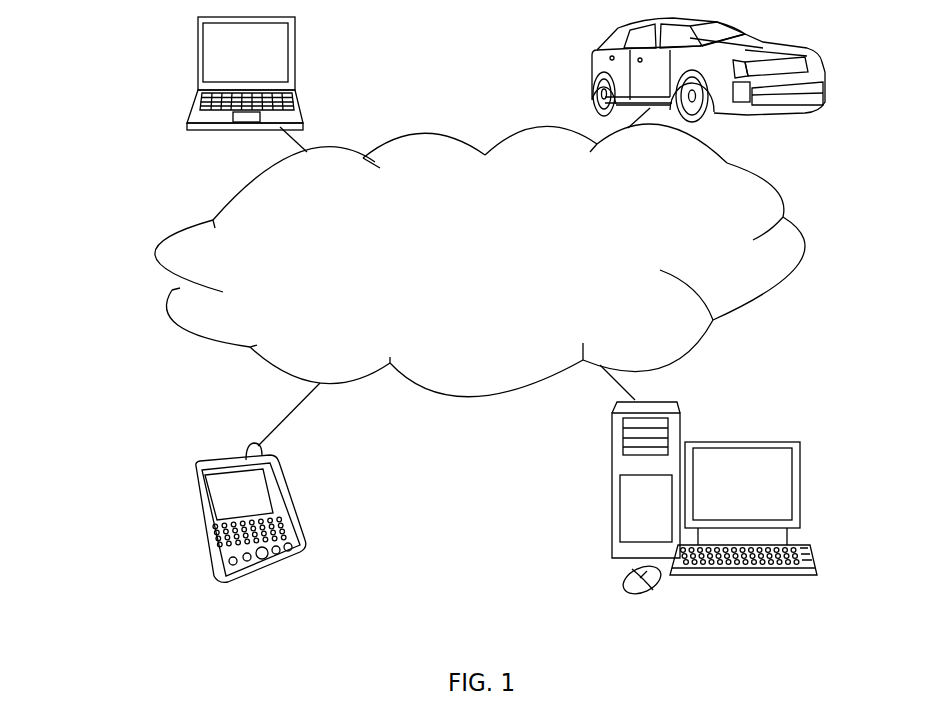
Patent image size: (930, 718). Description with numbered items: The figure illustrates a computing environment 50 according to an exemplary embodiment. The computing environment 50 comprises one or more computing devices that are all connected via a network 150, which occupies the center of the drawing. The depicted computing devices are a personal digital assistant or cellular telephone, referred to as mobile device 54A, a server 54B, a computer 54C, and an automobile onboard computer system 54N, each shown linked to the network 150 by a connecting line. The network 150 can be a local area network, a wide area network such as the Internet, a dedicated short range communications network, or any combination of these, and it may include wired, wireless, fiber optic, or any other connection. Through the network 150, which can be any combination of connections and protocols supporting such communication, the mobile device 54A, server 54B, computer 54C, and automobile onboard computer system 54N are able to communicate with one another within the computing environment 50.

The computing environment 50 is at (98, 208).
The network 150 is at (480, 277).
The mobile device 54A is at (287, 505).
The server 54B is at (742, 440).
The computer 54C is at (297, 60).
The automobile onboard computer system 54N is at (592, 73).